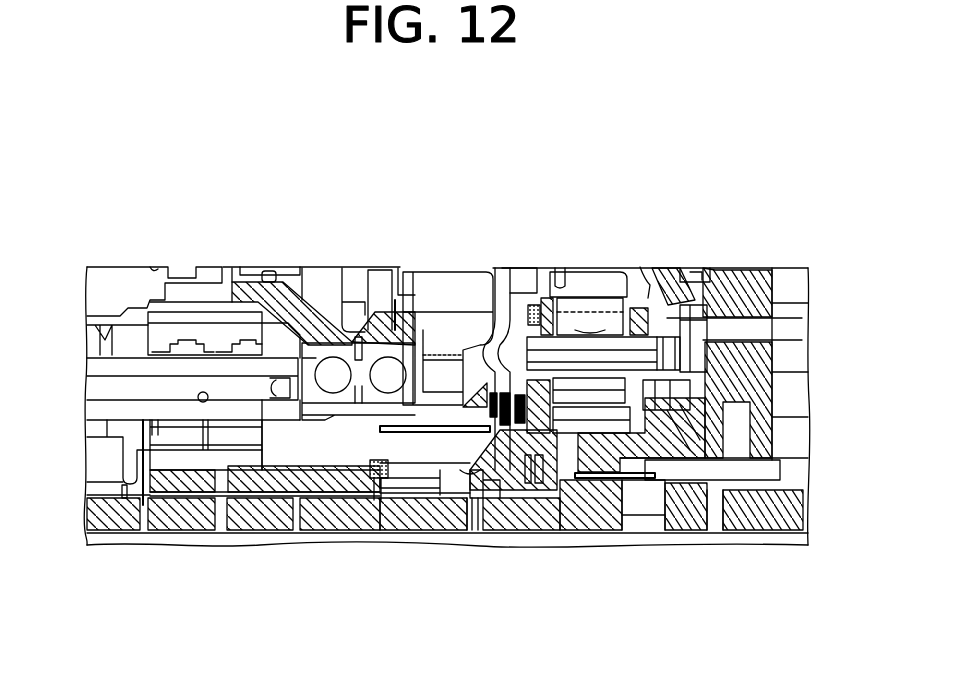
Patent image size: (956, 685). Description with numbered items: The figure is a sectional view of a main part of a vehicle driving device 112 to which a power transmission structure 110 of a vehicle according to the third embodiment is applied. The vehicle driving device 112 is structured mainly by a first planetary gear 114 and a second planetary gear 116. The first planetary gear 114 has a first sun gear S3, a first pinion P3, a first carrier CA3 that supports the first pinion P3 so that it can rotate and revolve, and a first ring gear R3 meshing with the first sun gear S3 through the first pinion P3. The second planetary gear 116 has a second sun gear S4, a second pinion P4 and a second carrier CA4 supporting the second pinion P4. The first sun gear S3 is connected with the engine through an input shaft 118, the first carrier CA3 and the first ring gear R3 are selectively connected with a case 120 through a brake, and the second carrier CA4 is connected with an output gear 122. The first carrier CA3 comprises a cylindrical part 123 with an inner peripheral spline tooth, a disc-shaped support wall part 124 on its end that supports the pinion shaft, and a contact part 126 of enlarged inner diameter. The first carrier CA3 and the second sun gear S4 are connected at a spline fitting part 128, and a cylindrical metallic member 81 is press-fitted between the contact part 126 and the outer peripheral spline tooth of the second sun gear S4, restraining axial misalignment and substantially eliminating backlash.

The power transmission structure 110 is at (378, 628).
The vehicle driving device 112 is at (713, 126).
The first planetary gear 114 is at (602, 262).
The second planetary gear 116 is at (145, 263).
The input shaft 118 is at (748, 528).
The case 120 is at (290, 268).
The output gear 122 is at (392, 270).
The cylindrical part 123 is at (477, 486).
The disc-shaped support wall part 124 is at (528, 330).
The contact part 126 is at (348, 532).
The spline fitting part 128 is at (445, 488).
The cylindrical metallic member 81 is at (377, 500).
The first carrier CA3 is at (543, 315).
The second carrier CA4 is at (320, 338).
The first ring gear R3 is at (592, 290).
The first pinion P3 is at (642, 280).
The second pinion P4 is at (143, 452).
The first sun gear S3 is at (576, 424).
The second sun gear S4 is at (266, 485).